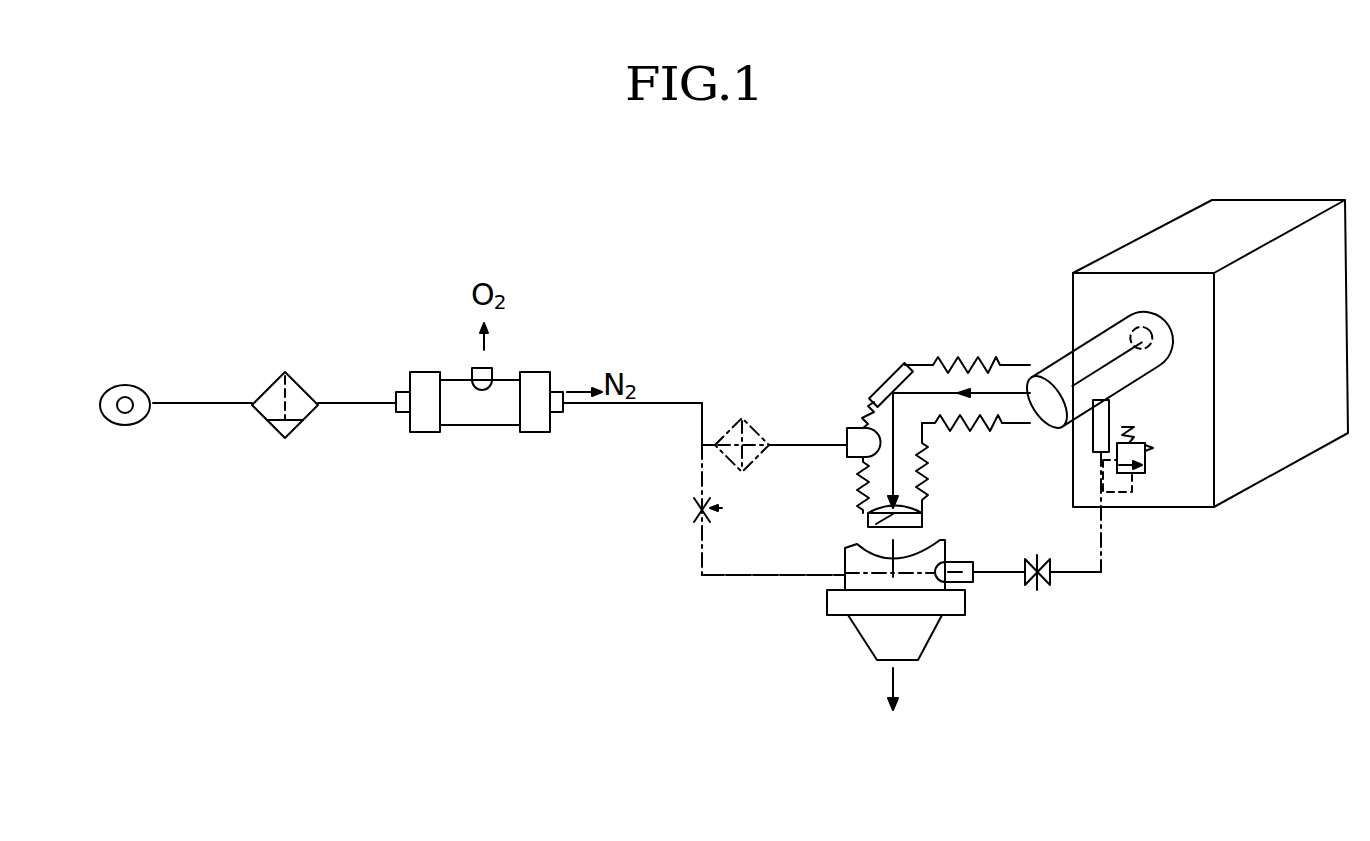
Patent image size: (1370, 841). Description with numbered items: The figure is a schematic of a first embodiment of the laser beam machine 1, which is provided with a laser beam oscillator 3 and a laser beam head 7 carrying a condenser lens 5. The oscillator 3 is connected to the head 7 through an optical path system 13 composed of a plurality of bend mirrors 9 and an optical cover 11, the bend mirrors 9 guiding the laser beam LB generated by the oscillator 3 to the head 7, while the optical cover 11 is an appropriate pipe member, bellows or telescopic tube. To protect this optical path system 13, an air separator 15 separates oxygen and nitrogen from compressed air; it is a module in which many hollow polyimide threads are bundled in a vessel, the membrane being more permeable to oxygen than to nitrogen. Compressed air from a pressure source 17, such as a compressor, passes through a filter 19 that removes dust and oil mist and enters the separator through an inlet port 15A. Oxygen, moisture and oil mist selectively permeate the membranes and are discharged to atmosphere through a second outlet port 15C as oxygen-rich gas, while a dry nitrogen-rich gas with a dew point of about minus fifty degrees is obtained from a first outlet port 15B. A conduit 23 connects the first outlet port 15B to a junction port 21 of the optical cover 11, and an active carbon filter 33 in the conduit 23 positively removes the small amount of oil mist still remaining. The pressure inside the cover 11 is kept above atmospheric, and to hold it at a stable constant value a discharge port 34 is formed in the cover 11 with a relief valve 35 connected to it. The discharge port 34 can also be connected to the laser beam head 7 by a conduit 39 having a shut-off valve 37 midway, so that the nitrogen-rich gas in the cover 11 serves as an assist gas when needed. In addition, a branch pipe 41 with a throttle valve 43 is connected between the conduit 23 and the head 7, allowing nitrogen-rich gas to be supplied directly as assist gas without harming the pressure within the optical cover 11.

The laser beam machine 1 is at (1007, 279).
The laser beam oscillator 3 is at (1188, 238).
The condenser lens 5 is at (867, 525).
The laser beam head 7 is at (867, 633).
The bend mirror 9 is at (885, 387).
The optical cover 11 is at (933, 458).
The optical path system 13 is at (912, 343).
The air separator 15 is at (484, 418).
The inlet port 15A is at (400, 413).
The first outlet port 15B is at (556, 413).
The second outlet port 15C is at (490, 368).
The pressure source 17 is at (131, 412).
The filter 19 is at (265, 422).
The junction port 21 is at (848, 456).
The conduit 23 is at (670, 402).
The active carbon filter 33 is at (747, 418).
The discharge port 34 is at (1093, 430).
The relief valve 35 is at (1147, 475).
The shut-off valve 37 is at (1045, 585).
The conduit 39 is at (1085, 574).
The branch pipe 41 is at (743, 576).
The throttle valve 43 is at (697, 518).
The laser beam LB is at (965, 388).